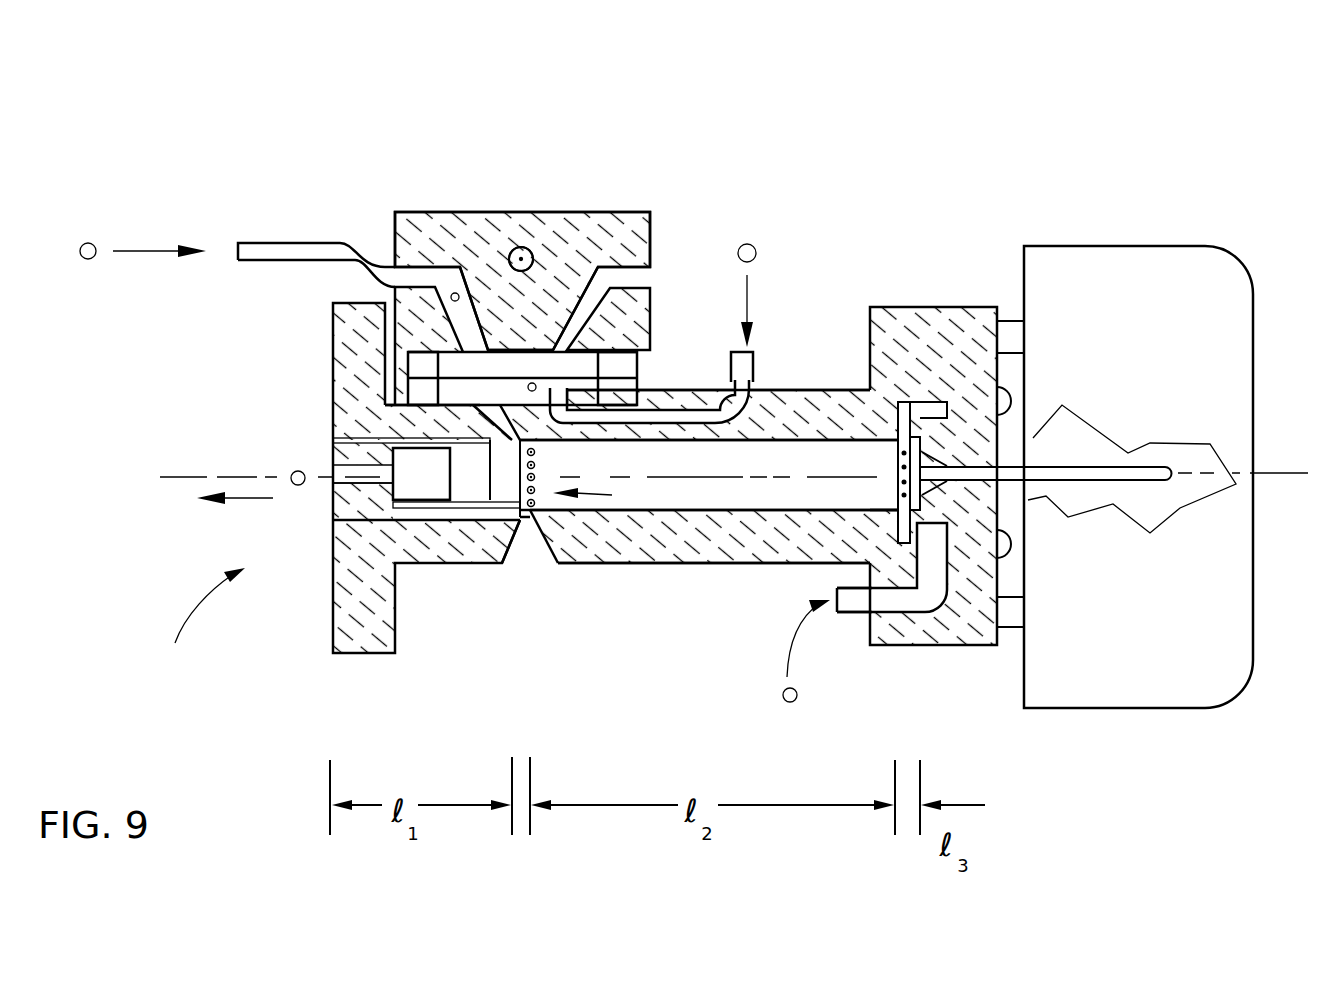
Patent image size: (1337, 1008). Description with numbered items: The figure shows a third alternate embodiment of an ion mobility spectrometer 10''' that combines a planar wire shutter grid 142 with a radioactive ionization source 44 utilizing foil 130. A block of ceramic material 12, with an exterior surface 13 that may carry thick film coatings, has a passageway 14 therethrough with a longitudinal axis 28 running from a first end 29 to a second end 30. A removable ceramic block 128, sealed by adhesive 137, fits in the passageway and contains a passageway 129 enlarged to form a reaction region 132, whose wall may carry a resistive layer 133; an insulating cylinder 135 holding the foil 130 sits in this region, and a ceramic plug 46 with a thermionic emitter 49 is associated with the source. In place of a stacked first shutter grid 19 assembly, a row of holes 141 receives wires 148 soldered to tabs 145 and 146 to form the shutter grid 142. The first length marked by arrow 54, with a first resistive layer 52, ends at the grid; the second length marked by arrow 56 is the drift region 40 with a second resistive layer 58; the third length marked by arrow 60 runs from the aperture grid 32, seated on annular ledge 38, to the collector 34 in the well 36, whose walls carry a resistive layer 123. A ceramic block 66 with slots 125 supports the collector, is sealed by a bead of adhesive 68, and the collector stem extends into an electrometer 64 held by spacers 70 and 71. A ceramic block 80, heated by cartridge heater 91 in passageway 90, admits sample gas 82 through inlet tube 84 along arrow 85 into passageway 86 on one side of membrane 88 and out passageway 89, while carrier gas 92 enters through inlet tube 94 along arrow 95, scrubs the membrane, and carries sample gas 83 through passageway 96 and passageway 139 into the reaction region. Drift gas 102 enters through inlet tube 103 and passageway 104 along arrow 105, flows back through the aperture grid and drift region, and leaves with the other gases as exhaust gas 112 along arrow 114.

The ion mobility spectrometer 10''' is at (528, 191).
The block of ceramic material 12 is at (819, 391).
The exterior surface 13 is at (690, 565).
The passageway 14 is at (720, 497).
The first shutter grid 19 is at (476, 458).
The longitudinal axis 28 is at (208, 476).
The first end 29 is at (196, 622).
The second end 30 is at (917, 483).
The aperture grid 32 is at (900, 455).
The collector 34 is at (988, 498).
The well 36 is at (1057, 521).
The annular ledge 38 is at (893, 533).
The drift region 40 is at (786, 462).
The ionization source 44 is at (428, 500).
The ceramic plug 46 is at (352, 565).
The thermionic emitter 49 is at (353, 507).
The first resistive layer 52 is at (452, 521).
The arrow 54 is at (467, 806).
The arrow 56 is at (807, 807).
The second resistive layer 58 is at (857, 447).
The arrow 60 is at (907, 828).
The electrometer 64 is at (1232, 700).
The ceramic block 66 is at (1010, 430).
The bead of adhesive 68 is at (1002, 416).
The spacer 70 is at (1015, 321).
The spacer 71 is at (1012, 628).
The ceramic block 80 is at (446, 211).
The sample gas 82 is at (88, 243).
The sample gas 83 is at (540, 383).
The inlet tube 84 is at (293, 243).
The arrow 85 is at (147, 250).
The passageway 86 is at (455, 293).
The membrane 88 is at (630, 372).
The passageway 89 is at (641, 274).
The passageway 90 is at (521, 258).
The cartridge heater 91 is at (530, 258).
The carrier gas 92 is at (755, 248).
The inlet tube 94 is at (752, 382).
The arrow 95 is at (748, 307).
The passageway 96 is at (480, 398).
The drift gas 102 is at (798, 697).
The inlet tube 103 is at (858, 613).
The passageway 104 is at (930, 615).
The arrow 105 is at (787, 675).
The exhaust gas 112 is at (300, 487).
The arrow 114 is at (233, 502).
The resistive layer 123 is at (1057, 521).
The slots or grooves 125 is at (1000, 452).
The ceramic block 128 is at (333, 452).
The passageway 129 is at (332, 487).
The foil 130 is at (421, 474).
The reaction region 132 is at (500, 490).
The resistive layer 133 is at (447, 423).
The cylinder 135 is at (456, 490).
The adhesive 137 is at (333, 437).
The passageway 139 is at (410, 441).
The holes 141 is at (540, 452).
The shutter grid 142 is at (606, 492).
The tab 145 is at (503, 555).
The tab 146 is at (553, 548).
The wires 148 is at (592, 468).